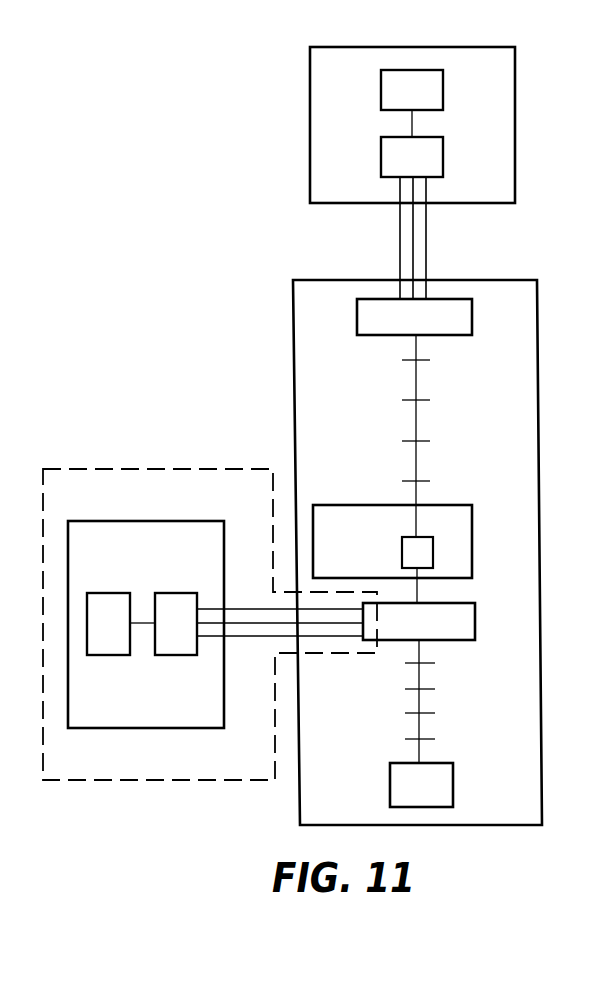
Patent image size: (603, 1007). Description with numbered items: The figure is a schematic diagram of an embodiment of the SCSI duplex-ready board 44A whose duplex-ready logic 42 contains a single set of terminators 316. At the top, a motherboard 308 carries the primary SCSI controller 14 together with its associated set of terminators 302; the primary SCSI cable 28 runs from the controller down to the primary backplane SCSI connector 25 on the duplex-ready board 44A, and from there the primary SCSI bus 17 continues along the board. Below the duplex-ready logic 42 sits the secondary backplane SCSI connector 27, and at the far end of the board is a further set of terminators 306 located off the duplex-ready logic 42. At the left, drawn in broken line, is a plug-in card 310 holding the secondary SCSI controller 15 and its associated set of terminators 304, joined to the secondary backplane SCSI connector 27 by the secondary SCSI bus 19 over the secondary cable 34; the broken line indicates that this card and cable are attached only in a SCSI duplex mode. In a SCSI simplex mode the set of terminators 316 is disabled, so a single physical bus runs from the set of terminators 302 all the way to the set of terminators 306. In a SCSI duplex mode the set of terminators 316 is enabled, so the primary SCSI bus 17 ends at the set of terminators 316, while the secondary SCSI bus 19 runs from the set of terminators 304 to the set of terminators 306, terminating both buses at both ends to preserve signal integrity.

The motherboard 308 is at (517, 125).
The set of terminators 302 is at (443, 83).
The primary SCSI controller 14 is at (443, 150).
The primary SCSI cable 28 is at (400, 233).
The primary SCSI bus 17 is at (415, 232).
The duplex-ready board 44A is at (527, 277).
The primary backplane SCSI connector 25 is at (473, 308).
The duplex-ready logic 42 is at (458, 505).
The set of terminators 316 is at (433, 558).
The secondary backplane SCSI connector 27 is at (462, 640).
The set of terminators 306 is at (412, 723).
The plug-in card 310 is at (158, 521).
The set of terminators 304 is at (105, 593).
The secondary SCSI controller 15 is at (170, 657).
The secondary SCSI bus 19 is at (237, 613).
The secondary cable 34 is at (243, 638).